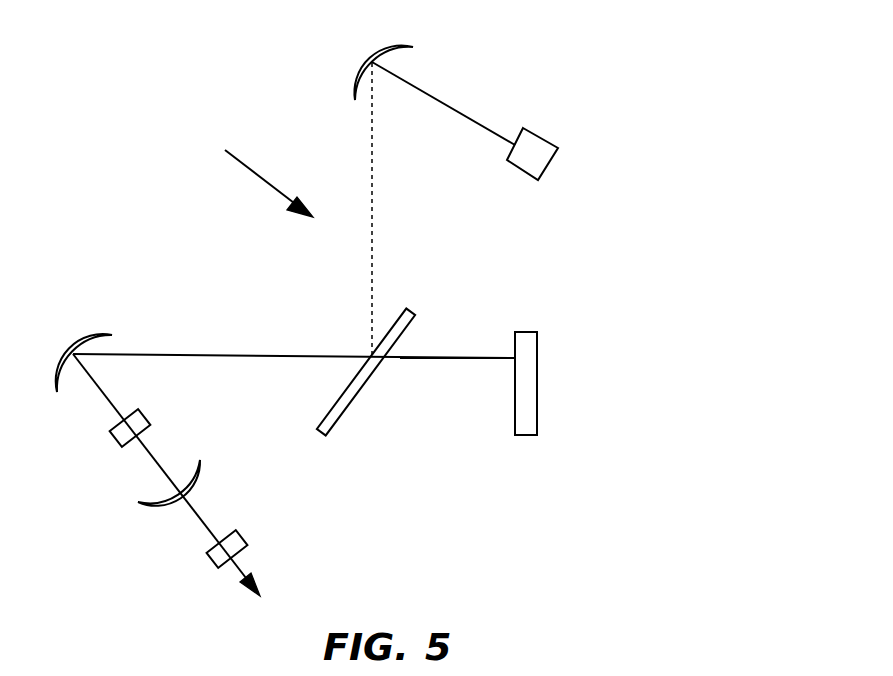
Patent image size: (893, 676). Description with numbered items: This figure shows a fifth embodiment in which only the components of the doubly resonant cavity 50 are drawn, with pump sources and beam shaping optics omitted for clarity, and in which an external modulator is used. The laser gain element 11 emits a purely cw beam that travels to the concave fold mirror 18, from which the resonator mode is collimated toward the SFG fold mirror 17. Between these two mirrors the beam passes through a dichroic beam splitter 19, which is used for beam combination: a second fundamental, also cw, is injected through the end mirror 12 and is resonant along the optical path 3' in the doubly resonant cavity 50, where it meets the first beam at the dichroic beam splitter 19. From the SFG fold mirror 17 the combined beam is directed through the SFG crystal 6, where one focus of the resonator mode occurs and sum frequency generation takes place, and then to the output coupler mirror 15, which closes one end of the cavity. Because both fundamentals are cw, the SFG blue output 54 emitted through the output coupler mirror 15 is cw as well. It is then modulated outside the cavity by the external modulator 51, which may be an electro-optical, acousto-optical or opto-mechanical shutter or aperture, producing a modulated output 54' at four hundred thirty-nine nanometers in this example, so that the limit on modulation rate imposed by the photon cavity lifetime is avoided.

The concave fold mirror 18 is at (372, 62).
The laser gain element 11 is at (543, 137).
The doubly resonant cavity 50 is at (247, 172).
The SFG fold mirror 17 is at (67, 350).
The SFG blue output 54 is at (159, 466).
The modulated output 54' is at (263, 600).
The SFG crystal 6 is at (115, 442).
The output coupler mirror 15 is at (157, 510).
The external modulator 51 is at (208, 562).
The dichroic beam splitter 19 is at (323, 433).
The resonator axis 3' is at (457, 390).
The end mirror 12 is at (525, 436).